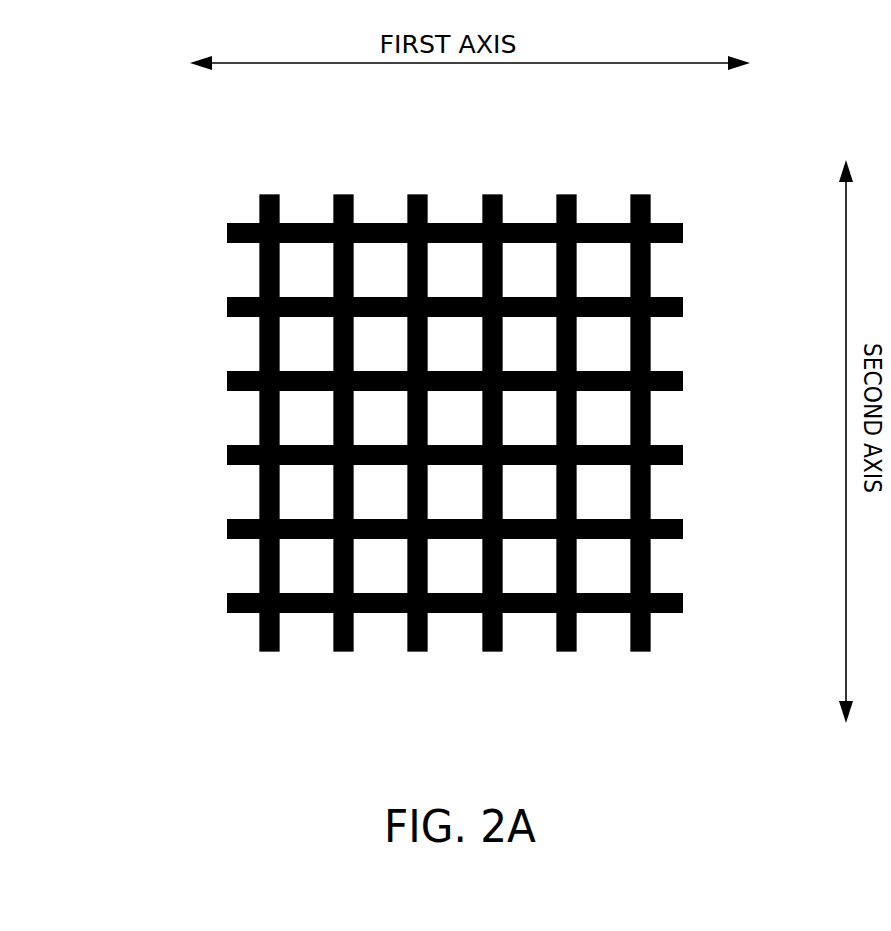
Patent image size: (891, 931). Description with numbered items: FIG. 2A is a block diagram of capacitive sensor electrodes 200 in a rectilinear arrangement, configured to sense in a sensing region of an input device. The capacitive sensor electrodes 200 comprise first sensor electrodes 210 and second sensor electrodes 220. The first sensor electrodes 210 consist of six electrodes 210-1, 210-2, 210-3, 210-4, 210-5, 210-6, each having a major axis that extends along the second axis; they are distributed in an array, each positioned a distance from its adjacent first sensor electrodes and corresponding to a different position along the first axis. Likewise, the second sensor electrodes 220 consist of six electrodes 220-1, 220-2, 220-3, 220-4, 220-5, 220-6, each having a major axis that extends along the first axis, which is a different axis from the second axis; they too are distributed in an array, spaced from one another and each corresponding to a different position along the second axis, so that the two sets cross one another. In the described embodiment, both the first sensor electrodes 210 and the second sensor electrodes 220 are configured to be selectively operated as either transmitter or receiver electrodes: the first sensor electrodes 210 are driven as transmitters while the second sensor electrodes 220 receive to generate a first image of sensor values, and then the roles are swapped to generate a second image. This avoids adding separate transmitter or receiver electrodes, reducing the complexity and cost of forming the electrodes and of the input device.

The capacitive sensor electrodes 200 is at (217, 173).
The first sensor electrodes 210 is at (258, 180).
The first sensor electrode 210-1 is at (270, 651).
The first sensor electrode 210-2 is at (344, 651).
The first sensor electrode 210-3 is at (418, 651).
The first sensor electrode 210-4 is at (493, 651).
The first sensor electrode 210-5 is at (567, 651).
The first sensor electrode 210-6 is at (641, 651).
The second sensor electrodes 220 is at (703, 623).
The second sensor electrode 220-1 is at (227, 227).
The second sensor electrode 220-2 is at (227, 301).
The second sensor electrode 220-3 is at (227, 375).
The second sensor electrode 220-4 is at (227, 449).
The second sensor electrode 220-5 is at (227, 523).
The second sensor electrode 220-6 is at (227, 597).